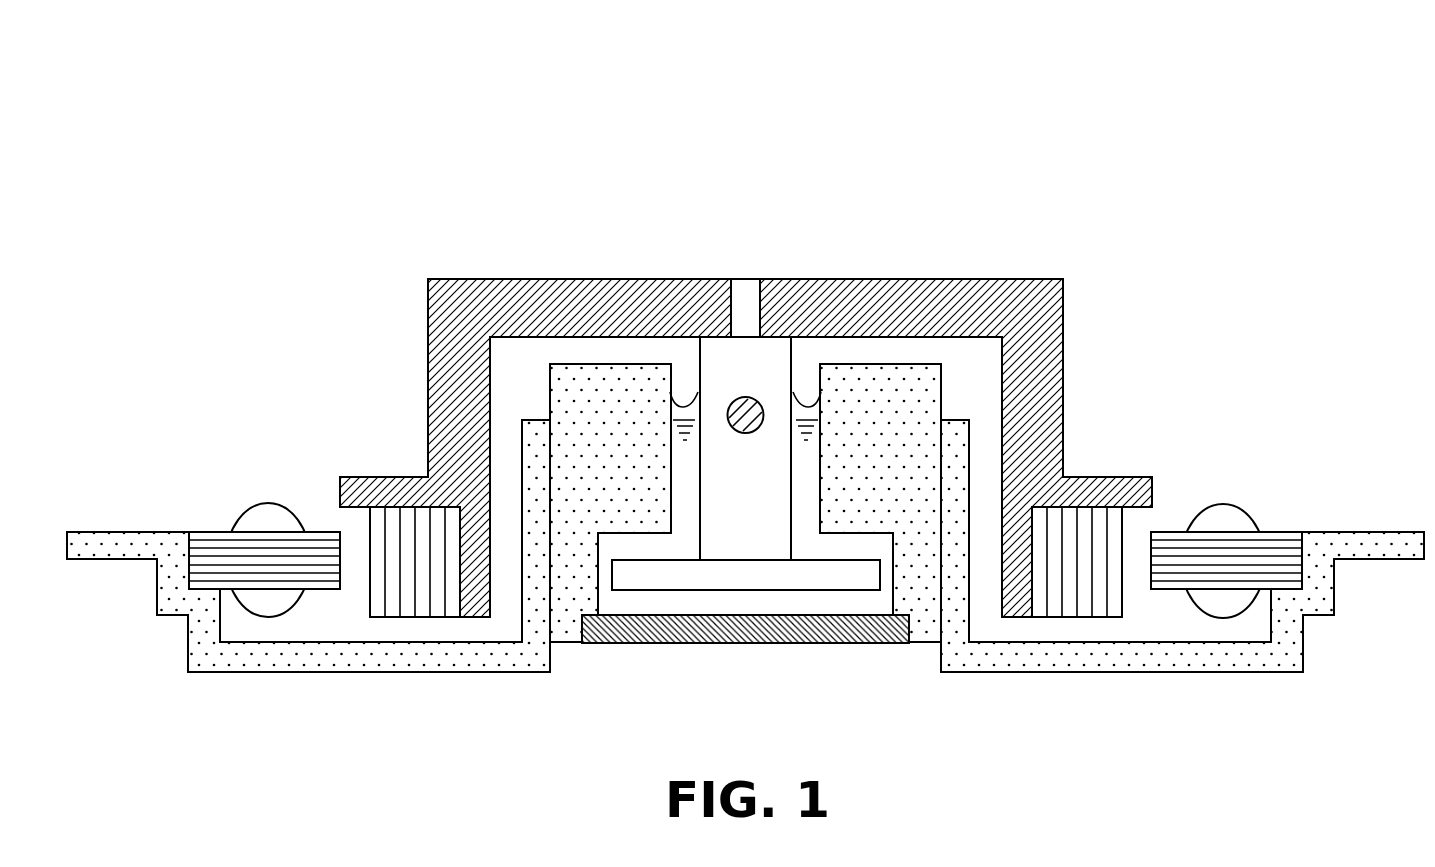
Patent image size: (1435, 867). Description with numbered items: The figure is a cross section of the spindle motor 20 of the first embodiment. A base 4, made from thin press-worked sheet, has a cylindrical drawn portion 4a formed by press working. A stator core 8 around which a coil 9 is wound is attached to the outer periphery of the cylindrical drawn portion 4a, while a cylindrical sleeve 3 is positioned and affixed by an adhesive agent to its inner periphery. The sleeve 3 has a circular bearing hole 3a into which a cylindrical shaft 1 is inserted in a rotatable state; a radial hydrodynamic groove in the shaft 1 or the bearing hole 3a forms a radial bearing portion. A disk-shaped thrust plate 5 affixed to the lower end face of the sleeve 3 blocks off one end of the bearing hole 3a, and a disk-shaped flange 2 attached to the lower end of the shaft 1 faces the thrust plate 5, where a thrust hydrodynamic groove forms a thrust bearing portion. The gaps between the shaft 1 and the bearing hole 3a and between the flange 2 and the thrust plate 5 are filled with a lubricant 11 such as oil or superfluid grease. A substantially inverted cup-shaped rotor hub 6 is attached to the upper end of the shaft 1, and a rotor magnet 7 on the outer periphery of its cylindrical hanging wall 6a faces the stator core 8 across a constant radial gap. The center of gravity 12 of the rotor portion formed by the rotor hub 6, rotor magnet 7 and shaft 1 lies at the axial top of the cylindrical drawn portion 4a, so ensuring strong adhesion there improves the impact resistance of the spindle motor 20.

The spindle motor 20 is at (777, 140).
The shaft 1 is at (772, 378).
The flange 2 is at (832, 580).
The sleeve 3 is at (877, 440).
The bearing hole 3a is at (672, 512).
The base 4 is at (1078, 658).
The cylindrical drawn portion 4a is at (952, 507).
The thrust plate 5 is at (757, 632).
The rotor hub 6 is at (1030, 322).
The cylindrical hanging wall 6a is at (475, 598).
The rotor magnet 7 is at (410, 582).
The stator core 8 is at (245, 562).
The coil 9 is at (268, 515).
The lubricant 11 is at (662, 597).
The center of gravity 12 is at (746, 394).